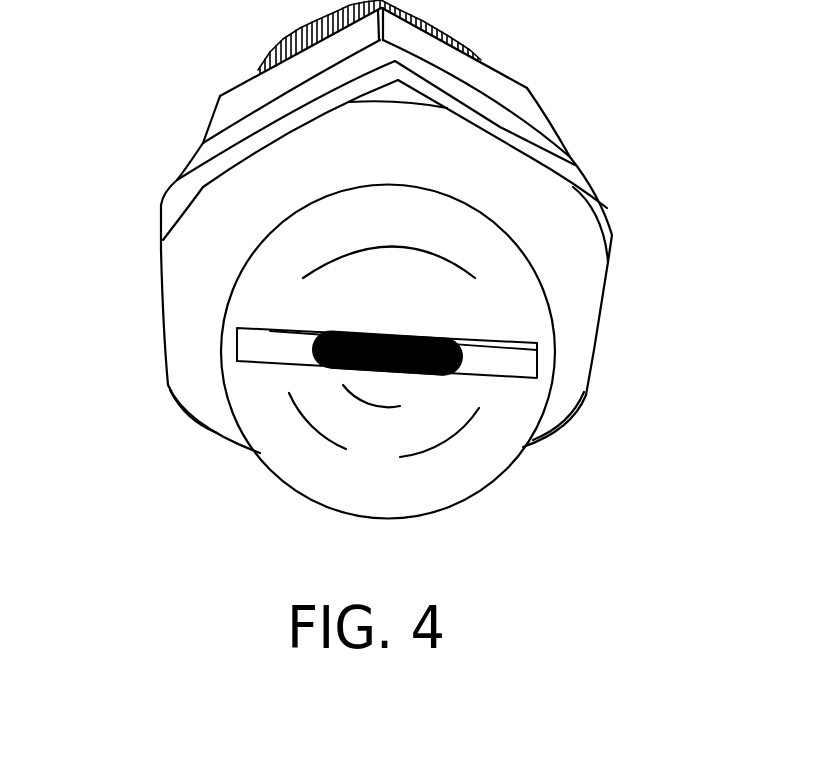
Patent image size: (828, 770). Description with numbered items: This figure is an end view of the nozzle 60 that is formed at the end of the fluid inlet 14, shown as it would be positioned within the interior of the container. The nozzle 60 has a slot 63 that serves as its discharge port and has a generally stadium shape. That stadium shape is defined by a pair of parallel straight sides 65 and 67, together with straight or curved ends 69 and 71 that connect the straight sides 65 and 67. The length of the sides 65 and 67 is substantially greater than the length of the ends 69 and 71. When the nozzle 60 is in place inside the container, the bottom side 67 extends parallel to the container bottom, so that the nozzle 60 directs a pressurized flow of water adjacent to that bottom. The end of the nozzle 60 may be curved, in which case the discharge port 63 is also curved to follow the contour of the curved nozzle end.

The fluid inlet 14 is at (550, 302).
The nozzle 60 is at (510, 465).
The slot 63 is at (537, 376).
The straight side 65 is at (327, 329).
The bottom side 67 is at (318, 368).
The end 69 is at (265, 350).
The end 71 is at (503, 350).